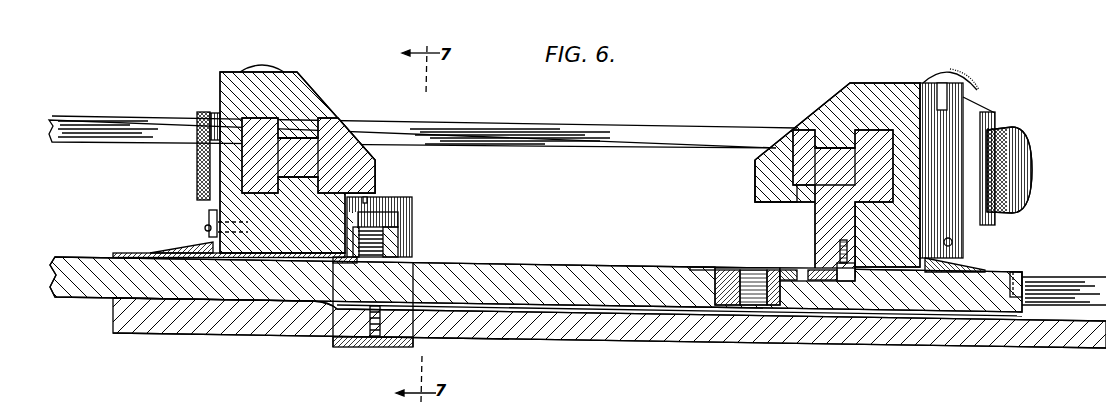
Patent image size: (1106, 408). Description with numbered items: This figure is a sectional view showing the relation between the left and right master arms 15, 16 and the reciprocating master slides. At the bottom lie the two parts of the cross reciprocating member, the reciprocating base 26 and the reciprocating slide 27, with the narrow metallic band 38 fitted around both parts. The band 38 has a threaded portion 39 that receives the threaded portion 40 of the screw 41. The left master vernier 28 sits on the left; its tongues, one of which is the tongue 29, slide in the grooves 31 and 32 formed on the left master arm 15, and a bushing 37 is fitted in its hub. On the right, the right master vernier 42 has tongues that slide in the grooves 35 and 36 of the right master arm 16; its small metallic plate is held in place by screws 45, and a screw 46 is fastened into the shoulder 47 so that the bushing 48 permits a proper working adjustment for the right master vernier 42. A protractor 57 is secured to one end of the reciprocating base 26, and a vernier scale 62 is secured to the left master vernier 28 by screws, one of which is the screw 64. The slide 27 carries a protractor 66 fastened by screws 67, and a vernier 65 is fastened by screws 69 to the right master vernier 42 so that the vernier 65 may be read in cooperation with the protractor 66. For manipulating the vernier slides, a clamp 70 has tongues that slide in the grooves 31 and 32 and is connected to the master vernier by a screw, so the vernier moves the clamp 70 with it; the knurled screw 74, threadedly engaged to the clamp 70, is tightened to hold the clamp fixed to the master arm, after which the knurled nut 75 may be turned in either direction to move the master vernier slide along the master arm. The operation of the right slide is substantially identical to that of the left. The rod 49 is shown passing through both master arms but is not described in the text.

The left master arm 15 is at (240, 175).
The right master arm 16 is at (767, 183).
The reciprocating base 26 is at (700, 338).
The reciprocating slide 27 is at (643, 275).
The left master vernier 28 is at (310, 95).
The tongue 29 is at (412, 218).
The groove 31 is at (320, 133).
The groove 32 is at (323, 180).
The groove 35 is at (813, 140).
The groove 36 is at (815, 190).
The bushing 37 is at (399, 224).
The metallic band 38 is at (338, 348).
The threaded portion 39 is at (413, 247).
The threaded portion 40 is at (410, 211).
The screw 41 is at (393, 196).
The right master vernier 42 is at (833, 98).
The screw 45 is at (843, 250).
The screw 46 is at (750, 268).
The shoulder 47 is at (703, 278).
The bushing 48 is at (790, 273).
The rod 49 is at (637, 127).
The protractor 57 is at (127, 253).
The vernier scale 62 is at (176, 250).
The screw 64 is at (212, 224).
The vernier 65 is at (965, 263).
The protractor 66 is at (1002, 270).
The screw 67 is at (1037, 277).
The screw 69 is at (952, 242).
The clamp 70 is at (997, 114).
The knurled screw 74 is at (201, 112).
The knurled nut 75 is at (254, 66).